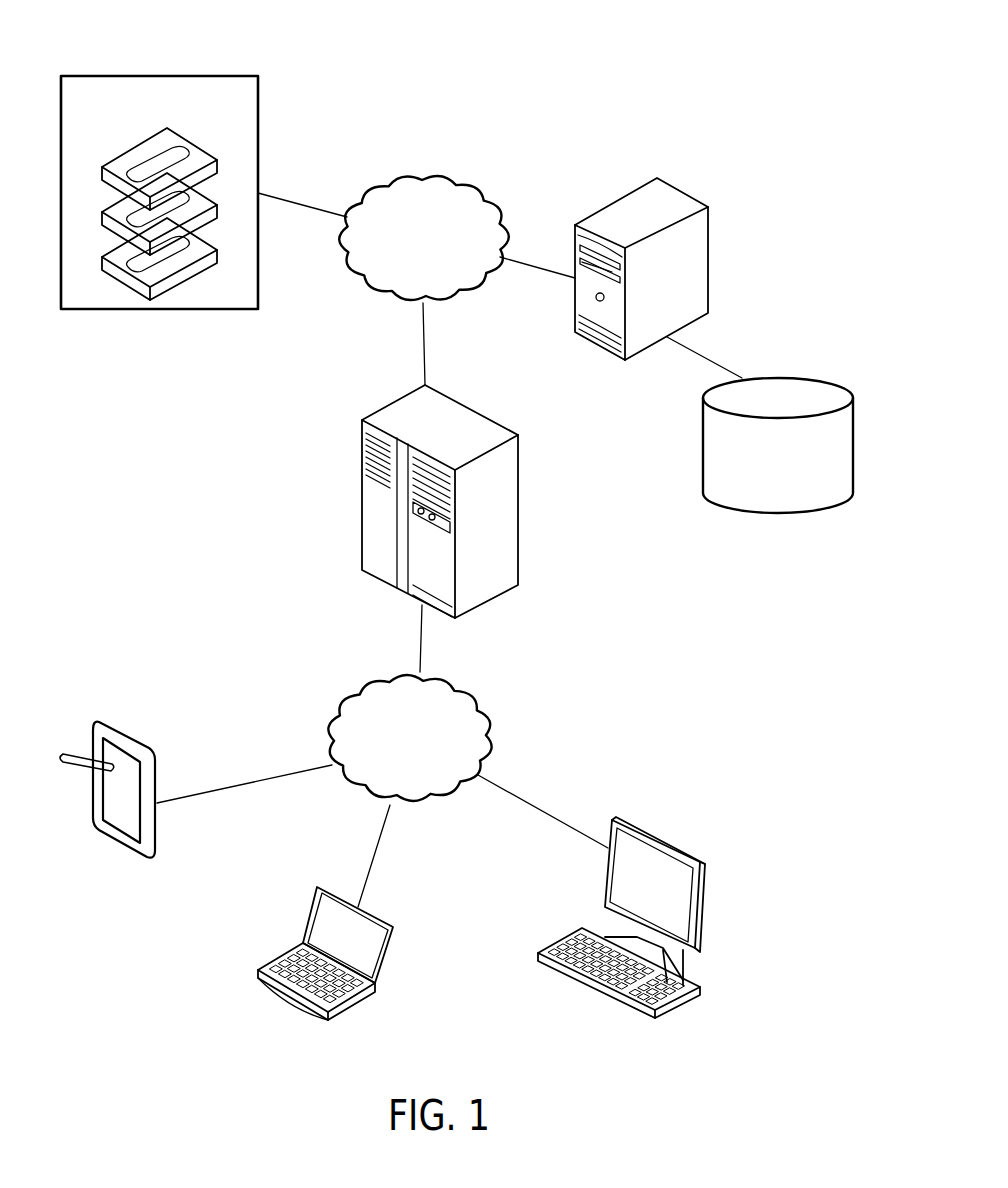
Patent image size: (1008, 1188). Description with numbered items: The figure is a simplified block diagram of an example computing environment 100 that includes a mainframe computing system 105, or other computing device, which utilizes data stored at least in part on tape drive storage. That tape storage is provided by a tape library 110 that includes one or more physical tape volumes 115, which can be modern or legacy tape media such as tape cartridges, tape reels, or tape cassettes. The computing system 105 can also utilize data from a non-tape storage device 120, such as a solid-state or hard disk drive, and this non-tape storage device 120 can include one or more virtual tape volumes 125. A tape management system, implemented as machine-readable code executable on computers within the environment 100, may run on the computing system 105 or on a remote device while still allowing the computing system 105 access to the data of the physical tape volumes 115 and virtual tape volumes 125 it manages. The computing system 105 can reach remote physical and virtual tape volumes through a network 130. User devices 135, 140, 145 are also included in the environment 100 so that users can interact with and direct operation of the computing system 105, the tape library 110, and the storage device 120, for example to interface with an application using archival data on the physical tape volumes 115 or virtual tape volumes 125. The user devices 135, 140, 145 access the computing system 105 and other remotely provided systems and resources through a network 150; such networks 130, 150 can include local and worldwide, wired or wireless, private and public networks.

The computing environment 100 is at (765, 101).
The mainframe computing system 105 is at (468, 407).
The tape library 110 is at (148, 76).
The physical tape volumes 115 is at (128, 280).
The non-tape storage device 120 is at (624, 196).
The virtual tape volumes 125 is at (787, 379).
The network 130 is at (416, 172).
The user device 135 is at (127, 733).
The user device 140 is at (380, 915).
The user device 145 is at (663, 840).
The network 150 is at (486, 706).